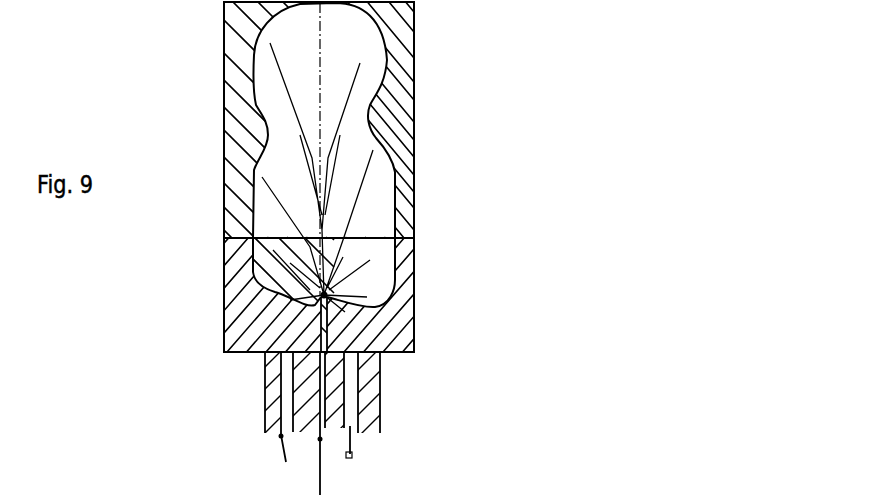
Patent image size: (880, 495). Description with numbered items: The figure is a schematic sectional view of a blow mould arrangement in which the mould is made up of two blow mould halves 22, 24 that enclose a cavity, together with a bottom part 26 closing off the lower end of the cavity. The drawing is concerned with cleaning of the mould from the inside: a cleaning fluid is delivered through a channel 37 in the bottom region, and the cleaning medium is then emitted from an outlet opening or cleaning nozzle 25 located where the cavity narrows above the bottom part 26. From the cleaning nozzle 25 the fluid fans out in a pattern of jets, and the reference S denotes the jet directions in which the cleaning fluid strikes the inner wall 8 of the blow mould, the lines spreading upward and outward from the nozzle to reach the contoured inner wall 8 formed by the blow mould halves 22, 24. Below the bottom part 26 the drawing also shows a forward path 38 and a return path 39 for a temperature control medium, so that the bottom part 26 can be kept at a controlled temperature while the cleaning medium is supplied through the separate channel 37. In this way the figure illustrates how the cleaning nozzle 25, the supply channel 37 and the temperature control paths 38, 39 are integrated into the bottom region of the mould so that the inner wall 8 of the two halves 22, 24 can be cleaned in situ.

The blow mould half 22 is at (241, 109).
The blow mould half 24 is at (372, 103).
The jet directions S is at (360, 63).
The inner wall 8 is at (253, 185).
The cleaning nozzle 25 is at (328, 293).
The bottom part 26 is at (364, 334).
The forward path 38 is at (283, 405).
The channel 37 is at (325, 395).
The return path 39 is at (353, 363).